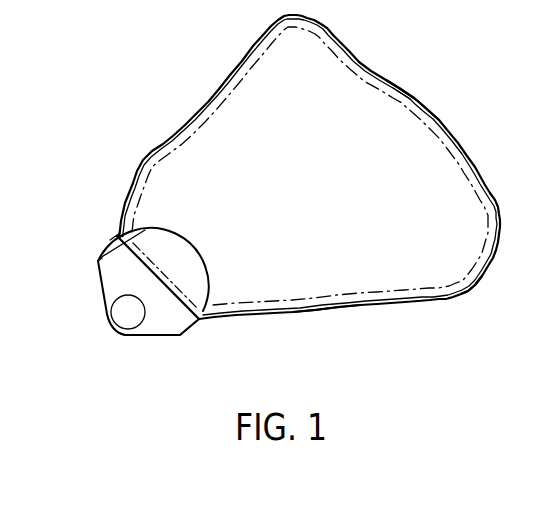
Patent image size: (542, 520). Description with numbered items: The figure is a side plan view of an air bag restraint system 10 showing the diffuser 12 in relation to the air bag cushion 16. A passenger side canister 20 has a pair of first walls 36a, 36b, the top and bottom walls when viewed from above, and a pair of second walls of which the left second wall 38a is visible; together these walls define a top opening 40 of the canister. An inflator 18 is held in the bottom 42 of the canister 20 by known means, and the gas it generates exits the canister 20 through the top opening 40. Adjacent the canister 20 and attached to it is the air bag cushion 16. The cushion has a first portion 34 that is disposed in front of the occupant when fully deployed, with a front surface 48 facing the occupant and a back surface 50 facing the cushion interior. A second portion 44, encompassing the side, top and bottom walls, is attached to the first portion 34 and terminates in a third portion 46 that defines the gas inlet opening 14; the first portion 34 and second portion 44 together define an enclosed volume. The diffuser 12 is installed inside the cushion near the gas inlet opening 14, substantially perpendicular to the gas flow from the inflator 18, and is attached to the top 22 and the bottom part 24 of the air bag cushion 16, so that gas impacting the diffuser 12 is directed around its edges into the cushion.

The air bag restraint system 10 is at (176, 88).
The diffuser 12 is at (210, 298).
The gas inlet opening 14 is at (150, 238).
The air bag cushion 16 is at (474, 293).
The inflator 18 is at (127, 320).
The canister 20 is at (100, 287).
The top 22 is at (147, 153).
The bottom part 24 is at (328, 313).
The first portion 34 is at (423, 107).
The first wall 36a is at (118, 240).
The first wall 36b is at (198, 323).
The second wall 38a is at (160, 323).
The top opening 40 is at (98, 260).
The bottom 42 is at (110, 317).
The second portion 44 is at (220, 67).
The third portion 46 is at (120, 236).
The front surface 48 is at (402, 84).
The back surface 50 is at (398, 99).